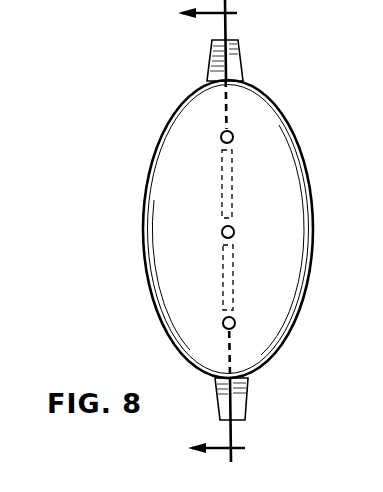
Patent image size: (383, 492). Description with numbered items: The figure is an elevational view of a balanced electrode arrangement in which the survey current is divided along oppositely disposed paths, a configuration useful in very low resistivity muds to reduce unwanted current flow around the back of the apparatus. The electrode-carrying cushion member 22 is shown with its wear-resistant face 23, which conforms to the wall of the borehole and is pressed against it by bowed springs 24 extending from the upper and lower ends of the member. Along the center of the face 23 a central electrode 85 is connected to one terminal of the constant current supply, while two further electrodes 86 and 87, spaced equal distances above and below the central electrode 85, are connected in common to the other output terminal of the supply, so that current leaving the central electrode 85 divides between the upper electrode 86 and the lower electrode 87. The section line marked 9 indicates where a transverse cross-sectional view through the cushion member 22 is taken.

The section line 9- 9 is at (203, 231).
The cushion member 22 is at (169, 142).
The wear-resistant face 23 is at (282, 148).
The bowed springs 24 is at (241, 50).
The central electrode 85 is at (233, 228).
The electrode 86 is at (232, 133).
The electrode 87 is at (234, 319).